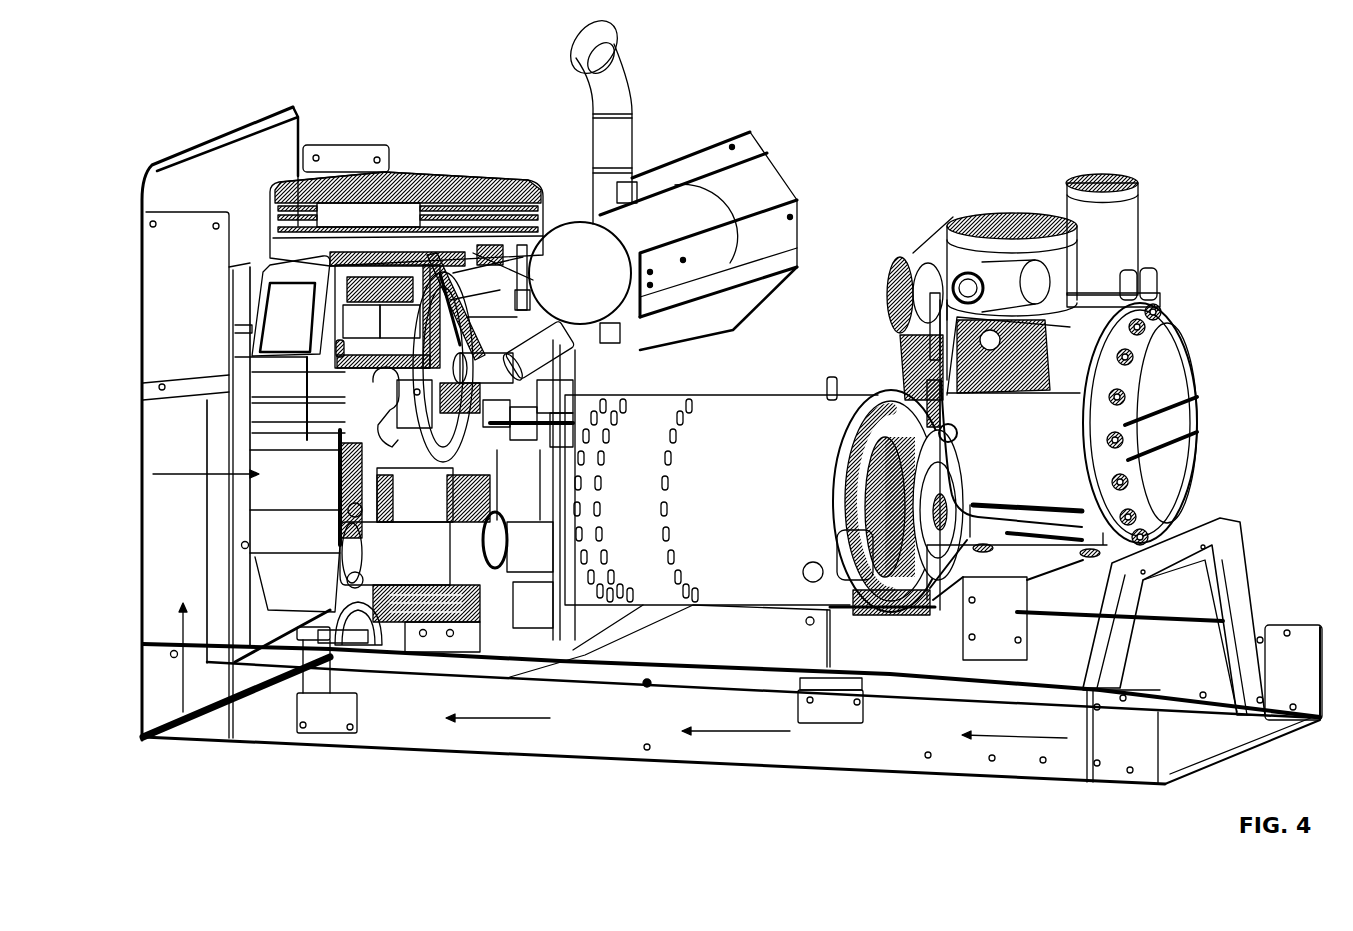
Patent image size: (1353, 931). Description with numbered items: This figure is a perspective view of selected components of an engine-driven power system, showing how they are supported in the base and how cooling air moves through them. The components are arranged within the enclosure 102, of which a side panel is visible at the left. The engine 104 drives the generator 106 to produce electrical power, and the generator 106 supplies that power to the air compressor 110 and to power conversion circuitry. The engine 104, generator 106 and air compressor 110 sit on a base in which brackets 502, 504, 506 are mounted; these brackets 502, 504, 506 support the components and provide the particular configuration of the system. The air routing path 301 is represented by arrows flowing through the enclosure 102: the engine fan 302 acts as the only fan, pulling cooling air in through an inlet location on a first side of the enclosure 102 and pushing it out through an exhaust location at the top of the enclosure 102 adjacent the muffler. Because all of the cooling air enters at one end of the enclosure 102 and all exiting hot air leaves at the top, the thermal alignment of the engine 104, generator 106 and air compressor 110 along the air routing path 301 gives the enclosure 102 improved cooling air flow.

The enclosure 102 is at (284, 137).
The engine 104 is at (640, 407).
The generator 106 is at (713, 524).
The air compressor 110 is at (992, 453).
The air routing path 301 is at (200, 478).
The engine fan 302 is at (300, 493).
The bracket 502 is at (1113, 628).
The bracket 504 is at (847, 667).
The bracket 506 is at (327, 723).